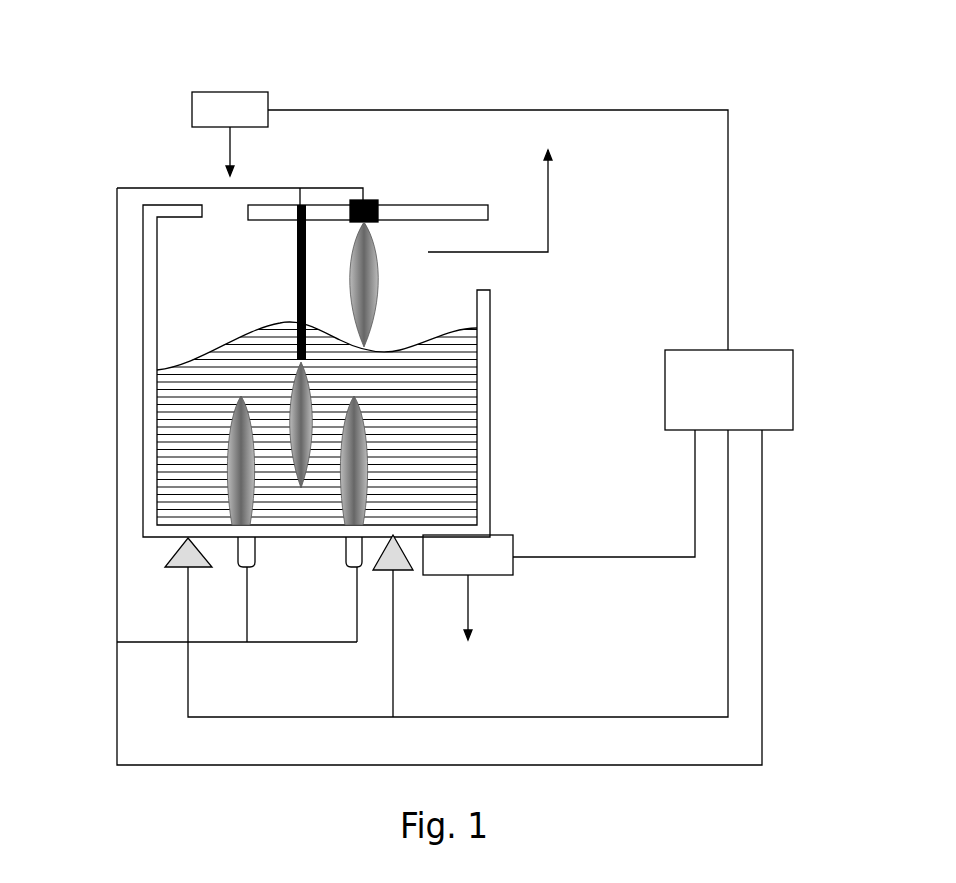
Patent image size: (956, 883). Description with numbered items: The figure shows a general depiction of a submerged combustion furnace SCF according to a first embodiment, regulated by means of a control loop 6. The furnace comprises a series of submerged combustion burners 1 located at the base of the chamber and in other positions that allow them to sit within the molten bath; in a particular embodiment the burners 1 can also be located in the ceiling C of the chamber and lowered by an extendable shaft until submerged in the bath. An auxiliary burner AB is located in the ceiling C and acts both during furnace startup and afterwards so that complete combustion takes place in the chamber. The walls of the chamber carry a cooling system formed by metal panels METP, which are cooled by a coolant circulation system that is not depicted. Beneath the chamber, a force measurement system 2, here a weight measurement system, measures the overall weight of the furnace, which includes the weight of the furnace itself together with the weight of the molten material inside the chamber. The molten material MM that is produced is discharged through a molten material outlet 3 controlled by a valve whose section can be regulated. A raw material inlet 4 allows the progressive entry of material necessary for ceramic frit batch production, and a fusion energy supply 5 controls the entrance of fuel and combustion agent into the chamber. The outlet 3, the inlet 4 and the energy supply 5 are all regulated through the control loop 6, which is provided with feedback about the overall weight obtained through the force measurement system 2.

The submerged combustion burners 1 is at (305, 245).
The force measurement system 2 is at (182, 567).
The molten material outlet 3 is at (470, 555).
The raw material inlet 4 is at (230, 108).
The fusion energy supply 5 is at (248, 540).
The control loop 6 is at (729, 390).
The auxiliary burner AB is at (380, 222).
The ceiling C is at (473, 217).
The submerged combustion furnace SCF is at (490, 103).
The metal panels METP is at (152, 360).
The molten material MM is at (469, 623).